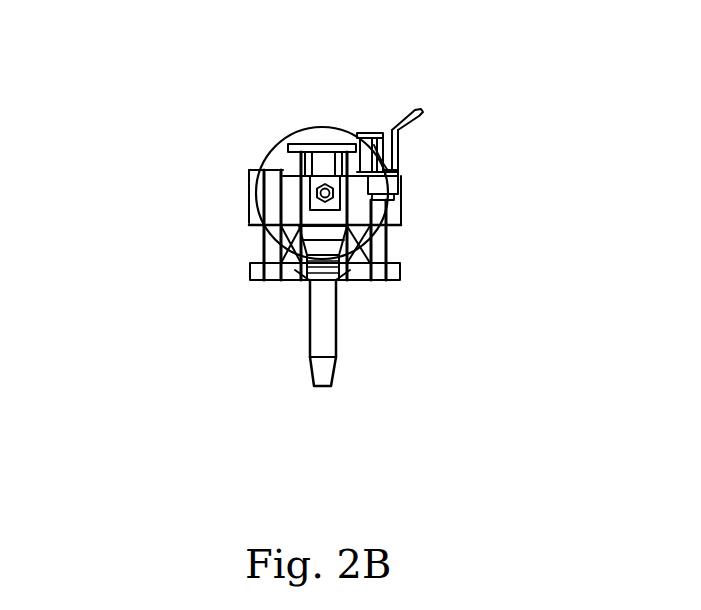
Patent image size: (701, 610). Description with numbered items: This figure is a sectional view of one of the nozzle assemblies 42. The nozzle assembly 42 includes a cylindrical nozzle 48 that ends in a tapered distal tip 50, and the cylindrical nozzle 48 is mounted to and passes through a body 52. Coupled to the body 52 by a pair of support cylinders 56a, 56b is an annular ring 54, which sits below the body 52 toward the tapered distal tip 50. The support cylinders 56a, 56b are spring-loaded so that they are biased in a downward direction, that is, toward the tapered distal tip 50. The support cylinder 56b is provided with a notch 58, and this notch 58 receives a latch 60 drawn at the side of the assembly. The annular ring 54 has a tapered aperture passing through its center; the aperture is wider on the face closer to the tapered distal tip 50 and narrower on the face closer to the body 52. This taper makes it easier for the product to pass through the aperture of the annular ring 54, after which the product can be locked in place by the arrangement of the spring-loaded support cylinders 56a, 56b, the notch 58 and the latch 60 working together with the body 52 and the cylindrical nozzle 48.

The nozzle assembly 42 is at (72, 91).
The cylindrical nozzle 48 is at (250, 264).
The tapered distal tip 50 is at (312, 383).
The body 52 is at (252, 178).
The annular ring 54 is at (282, 282).
The support cylinder 56a is at (258, 237).
The support cylinder 56b is at (388, 257).
The notch 58 is at (398, 188).
The latch 60 is at (418, 105).